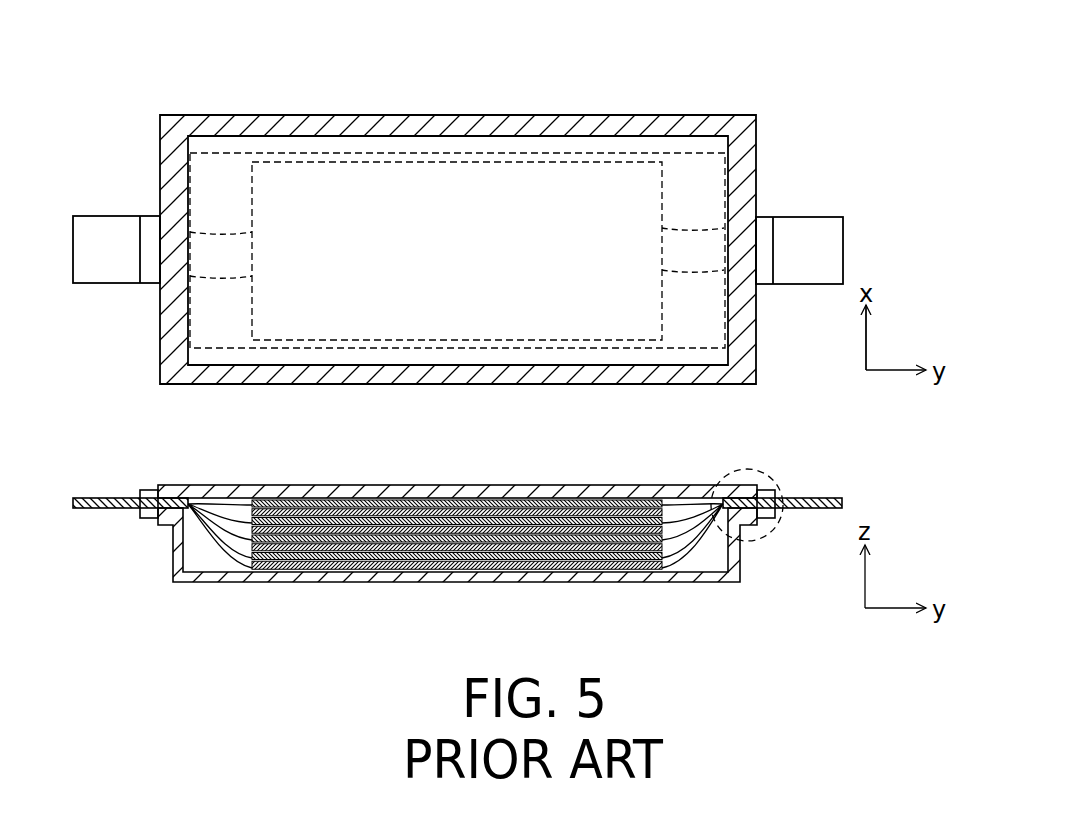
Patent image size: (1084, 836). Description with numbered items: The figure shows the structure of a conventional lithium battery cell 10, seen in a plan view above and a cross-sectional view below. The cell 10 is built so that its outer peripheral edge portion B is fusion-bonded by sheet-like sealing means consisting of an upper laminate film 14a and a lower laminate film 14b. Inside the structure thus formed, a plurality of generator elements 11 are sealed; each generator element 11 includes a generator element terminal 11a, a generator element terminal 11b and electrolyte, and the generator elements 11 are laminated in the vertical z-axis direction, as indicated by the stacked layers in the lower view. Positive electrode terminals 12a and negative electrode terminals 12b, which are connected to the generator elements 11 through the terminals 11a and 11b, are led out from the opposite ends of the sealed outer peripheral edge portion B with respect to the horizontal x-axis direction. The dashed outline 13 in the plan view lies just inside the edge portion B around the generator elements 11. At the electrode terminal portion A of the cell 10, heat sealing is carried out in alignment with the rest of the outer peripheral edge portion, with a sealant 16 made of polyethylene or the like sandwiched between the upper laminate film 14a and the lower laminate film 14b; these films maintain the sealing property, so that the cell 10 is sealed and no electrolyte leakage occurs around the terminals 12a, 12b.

The cell 10 is at (140, 93).
The outer peripheral edge portion B is at (205, 116).
The separator / insulating bag 13 is at (268, 152).
The generator elements 11 is at (375, 162).
The generator element terminal 11a is at (210, 228).
The generator element terminal 11b is at (702, 228).
The positive electrode terminal 12a is at (83, 215).
The negative electrode terminal 12b is at (831, 216).
The upper laminate film 14a is at (220, 485).
The lower laminate film 14b is at (332, 583).
The sealant 16 is at (147, 490).
The electrode terminal portion A is at (772, 533).